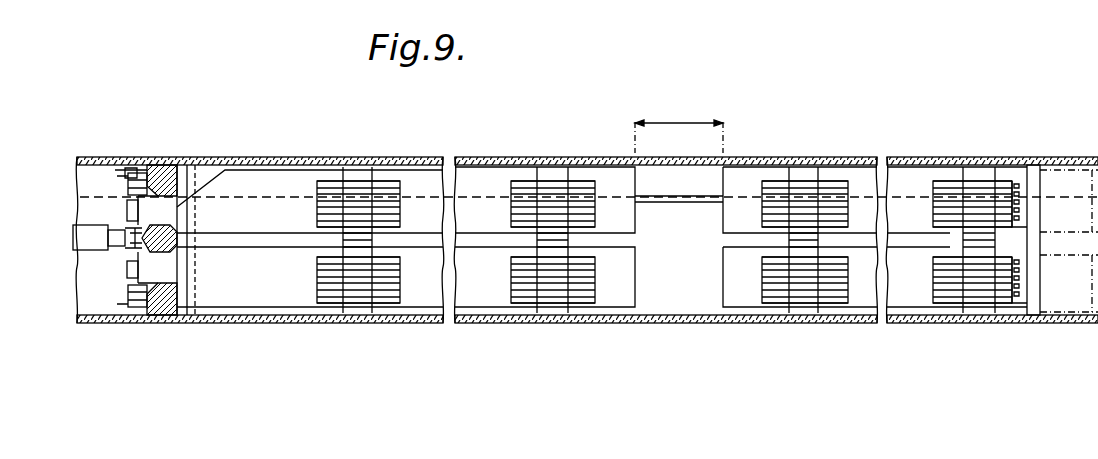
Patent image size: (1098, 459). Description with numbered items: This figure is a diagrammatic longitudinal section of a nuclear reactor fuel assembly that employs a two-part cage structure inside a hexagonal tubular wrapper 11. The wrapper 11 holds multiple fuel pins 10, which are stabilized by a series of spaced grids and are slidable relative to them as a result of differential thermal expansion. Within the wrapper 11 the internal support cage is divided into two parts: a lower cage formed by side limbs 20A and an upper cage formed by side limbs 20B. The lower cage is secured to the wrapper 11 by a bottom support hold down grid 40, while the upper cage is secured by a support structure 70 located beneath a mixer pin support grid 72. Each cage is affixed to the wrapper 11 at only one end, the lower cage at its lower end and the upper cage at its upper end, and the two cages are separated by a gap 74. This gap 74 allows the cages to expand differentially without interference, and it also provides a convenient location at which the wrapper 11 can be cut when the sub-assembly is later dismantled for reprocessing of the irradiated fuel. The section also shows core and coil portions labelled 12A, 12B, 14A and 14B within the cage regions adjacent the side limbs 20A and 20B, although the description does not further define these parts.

The fuel pins 10 is at (641, 196).
The hexagonal tubular wrapper 11 is at (320, 157).
The first magnetic core 12A is at (808, 170).
The second magnetic core 12B is at (352, 170).
The first coil 14A is at (836, 180).
The second coil 14B is at (332, 303).
The side limbs of lower cage 20A is at (744, 185).
The side limbs of upper cage 20B is at (280, 182).
The bottom support hold down grid 40 is at (986, 235).
The support structure 70 is at (190, 185).
The mixer pin support grid 72 is at (166, 303).
The gap 74 is at (688, 122).